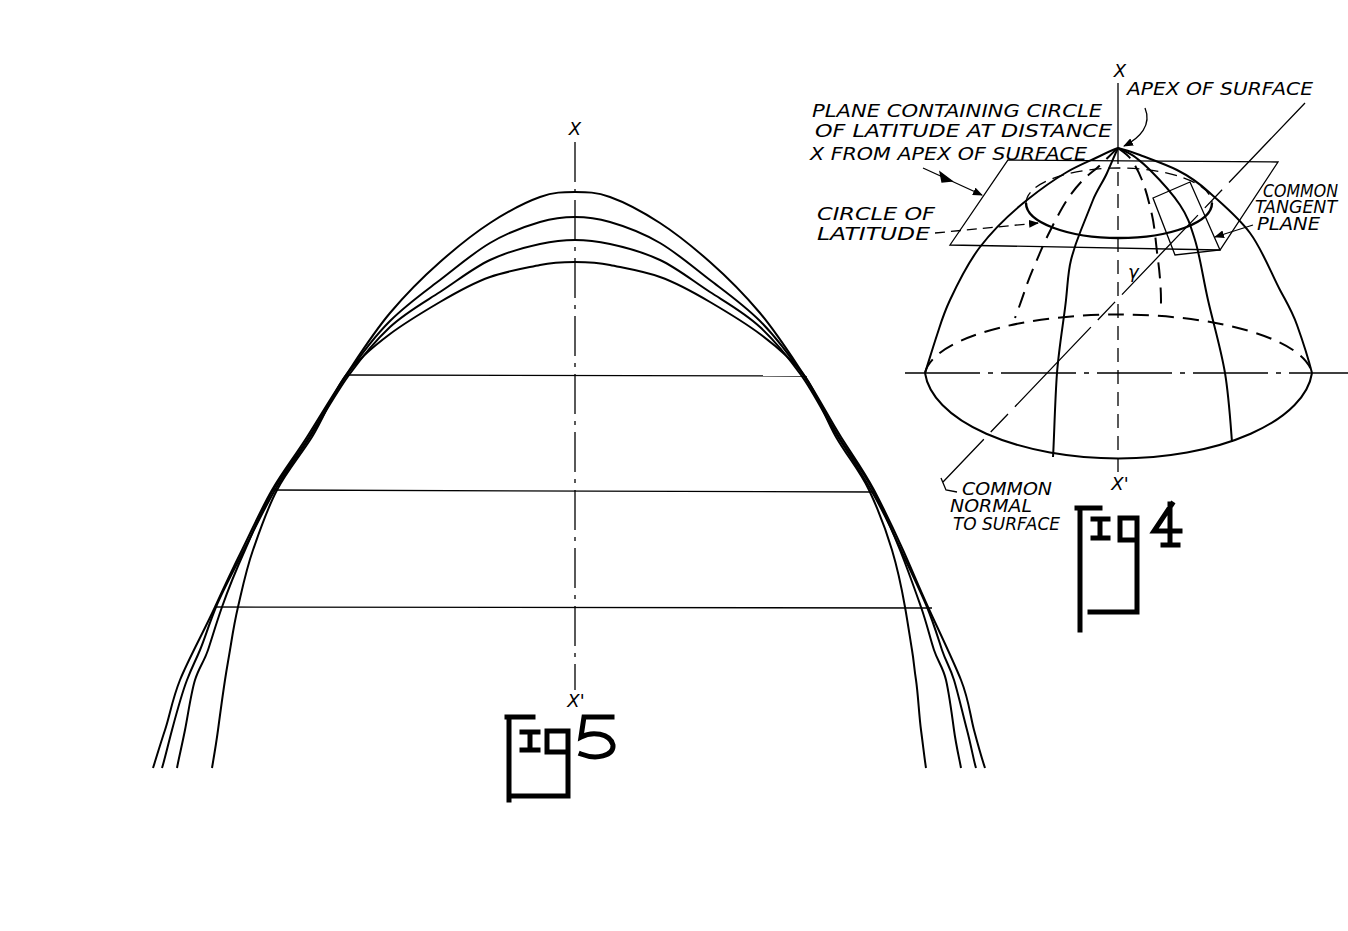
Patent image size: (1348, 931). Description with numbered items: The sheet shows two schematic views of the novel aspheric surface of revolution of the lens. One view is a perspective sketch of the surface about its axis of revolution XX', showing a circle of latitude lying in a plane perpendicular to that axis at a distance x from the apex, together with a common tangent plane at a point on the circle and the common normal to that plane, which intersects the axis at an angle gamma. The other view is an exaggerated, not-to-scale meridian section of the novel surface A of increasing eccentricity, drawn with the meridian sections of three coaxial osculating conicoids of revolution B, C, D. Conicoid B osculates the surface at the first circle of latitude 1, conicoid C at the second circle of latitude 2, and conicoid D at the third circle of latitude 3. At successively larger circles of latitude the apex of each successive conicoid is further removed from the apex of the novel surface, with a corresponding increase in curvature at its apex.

The first circle of latitude 1 is at (571, 378).
The second circle of latitude 2 is at (570, 492).
The third circle of latitude 3 is at (567, 610).
The novel aspheric surface of revolution A is at (567, 492).
The first coaxial osculating conicoid of revolution B is at (568, 527).
The second coaxial osculating conicoid of revolution C is at (568, 504).
The third coaxial osculating conicoid of revolution D is at (568, 516).